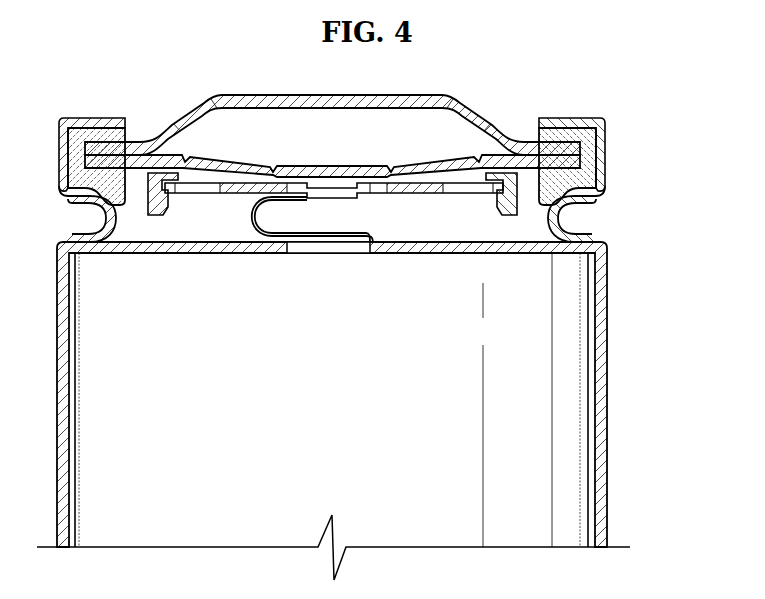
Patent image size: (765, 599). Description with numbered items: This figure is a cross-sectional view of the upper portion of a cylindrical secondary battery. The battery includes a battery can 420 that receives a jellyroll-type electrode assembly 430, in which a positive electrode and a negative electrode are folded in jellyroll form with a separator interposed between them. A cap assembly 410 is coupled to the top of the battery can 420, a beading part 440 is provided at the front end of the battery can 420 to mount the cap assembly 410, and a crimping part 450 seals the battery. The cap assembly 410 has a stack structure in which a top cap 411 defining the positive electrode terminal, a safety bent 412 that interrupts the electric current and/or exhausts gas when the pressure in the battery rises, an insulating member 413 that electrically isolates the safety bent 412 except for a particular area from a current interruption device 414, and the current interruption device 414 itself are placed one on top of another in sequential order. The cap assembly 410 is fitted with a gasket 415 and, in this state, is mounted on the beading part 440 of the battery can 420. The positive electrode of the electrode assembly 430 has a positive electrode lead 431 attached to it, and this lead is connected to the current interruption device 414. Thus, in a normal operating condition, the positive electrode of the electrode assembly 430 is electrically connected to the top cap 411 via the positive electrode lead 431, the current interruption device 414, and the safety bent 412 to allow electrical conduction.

The cap assembly 410 is at (398, 159).
The top cap 411 is at (582, 147).
The safety bent 412 is at (584, 163).
The insulating member 413 is at (514, 191).
The current interruption device 414 is at (502, 214).
The gasket 415 is at (586, 182).
The battery can 420 is at (606, 362).
The jellyroll-type electrode assembly 430 is at (573, 318).
The positive electrode lead 431 is at (252, 213).
The beading part 440 is at (96, 206).
The crimping part 450 is at (106, 117).